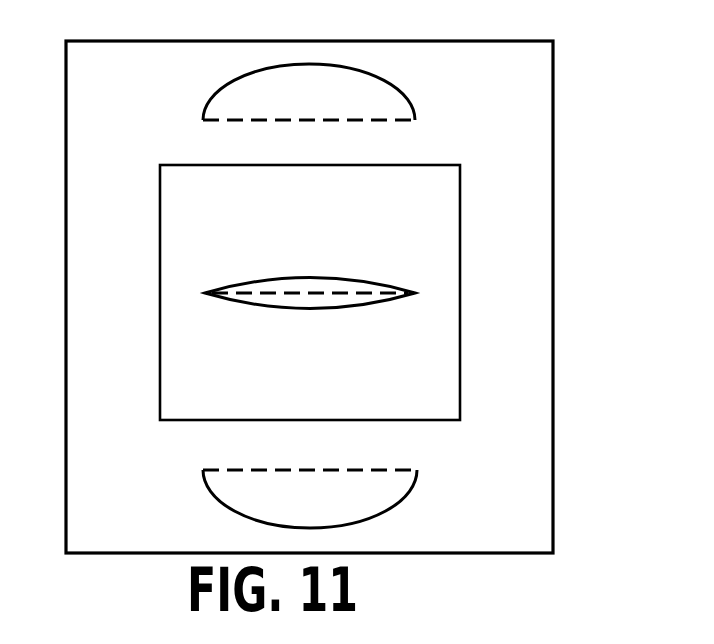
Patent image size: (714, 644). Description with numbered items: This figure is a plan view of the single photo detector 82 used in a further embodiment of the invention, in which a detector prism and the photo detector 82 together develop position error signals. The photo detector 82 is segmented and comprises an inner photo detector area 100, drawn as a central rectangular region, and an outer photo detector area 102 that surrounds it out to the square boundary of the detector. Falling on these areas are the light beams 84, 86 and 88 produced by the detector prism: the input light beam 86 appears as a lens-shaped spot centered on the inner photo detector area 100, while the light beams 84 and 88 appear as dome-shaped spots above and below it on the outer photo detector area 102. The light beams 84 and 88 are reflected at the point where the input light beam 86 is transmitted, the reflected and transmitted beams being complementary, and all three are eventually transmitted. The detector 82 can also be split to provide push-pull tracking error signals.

The photo detector 82 is at (556, 392).
The light beam 84 is at (403, 93).
The input light beam 86 is at (323, 275).
The light beam 88 is at (400, 497).
The inner photo detector area 100 is at (443, 258).
The outer photo detector area 102 is at (537, 100).